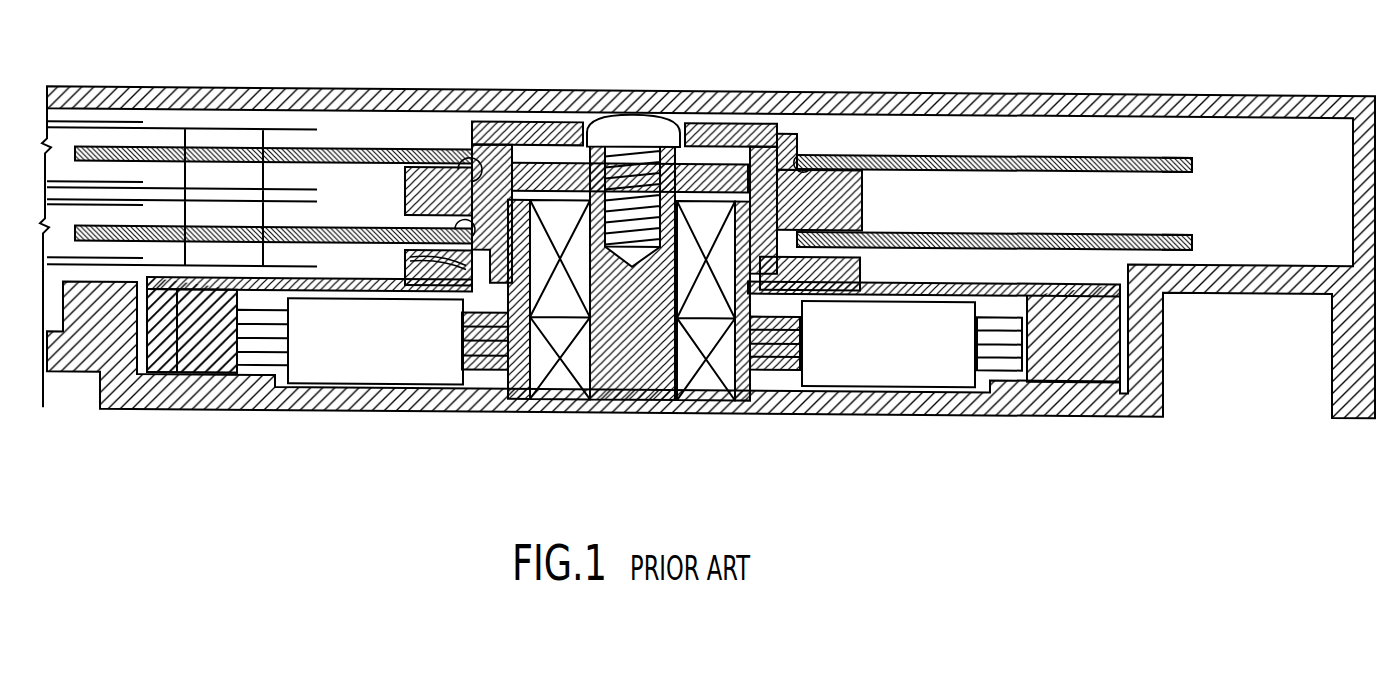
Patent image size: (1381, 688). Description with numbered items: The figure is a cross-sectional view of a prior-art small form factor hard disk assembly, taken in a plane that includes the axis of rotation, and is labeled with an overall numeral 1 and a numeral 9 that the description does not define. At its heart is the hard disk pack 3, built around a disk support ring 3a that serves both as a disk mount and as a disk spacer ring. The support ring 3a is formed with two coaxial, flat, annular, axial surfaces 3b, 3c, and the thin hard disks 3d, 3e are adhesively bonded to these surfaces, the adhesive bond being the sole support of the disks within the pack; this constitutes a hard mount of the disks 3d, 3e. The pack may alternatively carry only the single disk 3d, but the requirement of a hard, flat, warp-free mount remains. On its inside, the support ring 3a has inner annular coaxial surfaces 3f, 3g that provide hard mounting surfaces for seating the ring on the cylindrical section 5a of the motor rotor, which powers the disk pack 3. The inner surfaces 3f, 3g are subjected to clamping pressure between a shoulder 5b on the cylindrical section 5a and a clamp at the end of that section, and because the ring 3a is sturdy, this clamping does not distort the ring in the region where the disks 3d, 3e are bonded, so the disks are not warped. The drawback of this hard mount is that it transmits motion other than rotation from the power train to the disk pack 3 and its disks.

The housing 1 is at (922, 86).
The flexible printed circuit 9 is at (155, 120).
The hard disk pack 3 is at (667, 204).
The disk support ring 3a is at (862, 192).
The flat annular axial surface 3b is at (860, 146).
The flat annular axial surface 3c is at (855, 243).
The hard disk 3d is at (1192, 156).
The hard disk 3e is at (1192, 236).
The inner annular coaxial surface 3f is at (405, 170).
The inner annular coaxial surface 3g is at (405, 222).
The cylindrical section 5a is at (800, 166).
The shoulder 5b is at (405, 256).